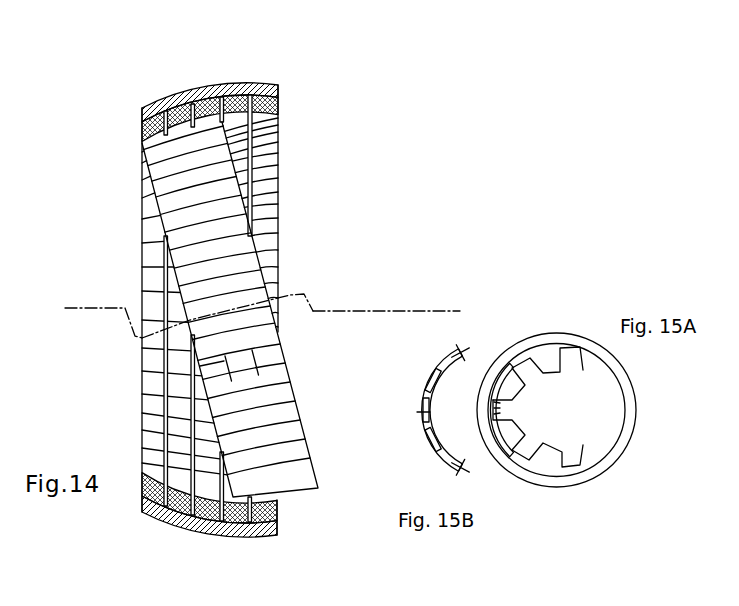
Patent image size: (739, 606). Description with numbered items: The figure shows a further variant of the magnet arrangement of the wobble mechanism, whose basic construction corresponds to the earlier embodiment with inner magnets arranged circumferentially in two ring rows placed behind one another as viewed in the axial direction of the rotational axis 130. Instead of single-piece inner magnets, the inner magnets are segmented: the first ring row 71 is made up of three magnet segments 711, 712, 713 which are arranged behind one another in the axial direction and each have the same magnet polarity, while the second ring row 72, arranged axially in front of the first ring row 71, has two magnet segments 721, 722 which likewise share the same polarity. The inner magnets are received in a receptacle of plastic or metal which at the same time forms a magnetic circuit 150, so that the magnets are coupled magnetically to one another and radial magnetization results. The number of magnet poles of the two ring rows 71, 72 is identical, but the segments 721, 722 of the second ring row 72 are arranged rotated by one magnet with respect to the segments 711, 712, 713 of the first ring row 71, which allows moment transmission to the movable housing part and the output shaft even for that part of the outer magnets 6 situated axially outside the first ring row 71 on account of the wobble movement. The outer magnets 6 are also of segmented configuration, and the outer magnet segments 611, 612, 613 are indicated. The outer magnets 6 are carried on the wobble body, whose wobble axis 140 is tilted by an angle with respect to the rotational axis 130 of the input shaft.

The first ring row 71 is at (226, 288).
The magnetic circuit 150 is at (142, 108).
The second ring row 72 is at (323, 211).
The magnet segment 721 is at (240, 166).
The magnet segment 722 is at (272, 173).
The outer magnets 6 is at (227, 231).
The wobble axis 140 is at (292, 293).
The rotational axis 130 is at (328, 310).
The outer magnet segment 611 is at (273, 354).
The outer magnet segment 612 is at (247, 370).
The outer magnet segment 613 is at (213, 374).
The magnet segment 711 is at (147, 430).
The magnet segment 712 is at (177, 440).
The magnet segment 713 is at (205, 440).